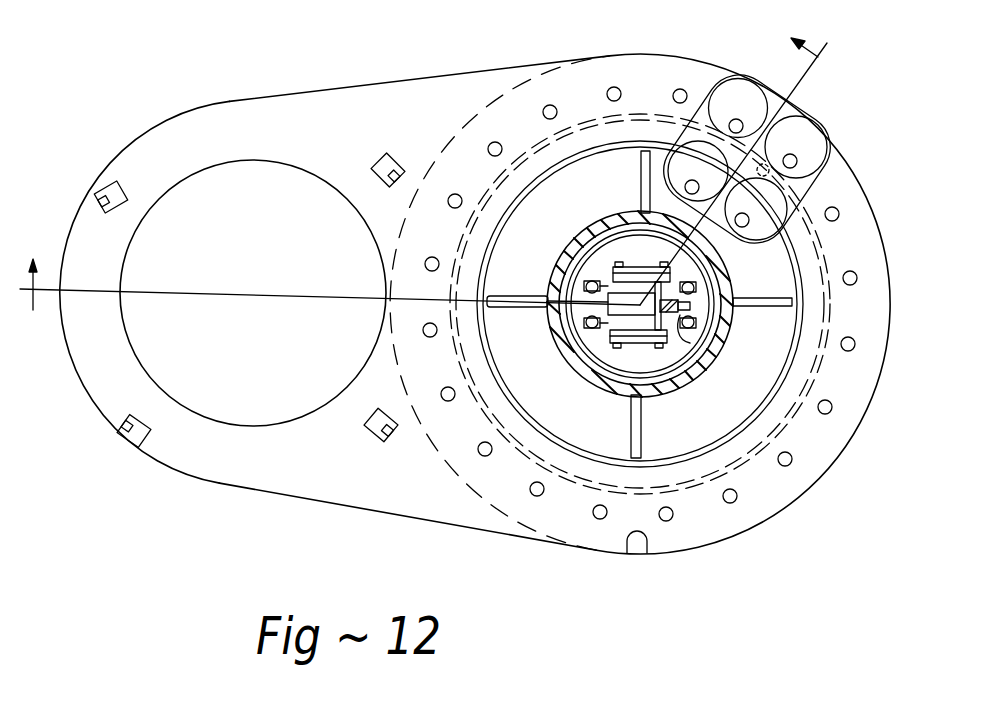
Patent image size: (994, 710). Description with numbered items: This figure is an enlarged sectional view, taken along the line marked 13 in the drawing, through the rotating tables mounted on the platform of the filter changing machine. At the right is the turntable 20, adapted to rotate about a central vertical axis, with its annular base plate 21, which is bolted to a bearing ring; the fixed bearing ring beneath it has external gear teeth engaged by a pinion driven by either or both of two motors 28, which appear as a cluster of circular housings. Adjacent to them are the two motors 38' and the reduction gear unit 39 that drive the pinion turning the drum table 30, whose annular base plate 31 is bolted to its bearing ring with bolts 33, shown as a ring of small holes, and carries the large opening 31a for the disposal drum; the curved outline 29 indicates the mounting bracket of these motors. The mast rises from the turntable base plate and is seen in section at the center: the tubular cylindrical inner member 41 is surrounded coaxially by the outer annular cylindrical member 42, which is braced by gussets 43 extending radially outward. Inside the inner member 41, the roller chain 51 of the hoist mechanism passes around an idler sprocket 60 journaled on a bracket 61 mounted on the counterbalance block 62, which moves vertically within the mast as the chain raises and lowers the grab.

The section line 13- 13 is at (440, 191).
The turntable 20 is at (518, 140).
The annular base plate 21 is at (600, 473).
The motor 28 is at (727, 190).
The roller cluster 29 is at (703, 127).
The drum table 30 is at (255, 78).
The annular base plate 31 is at (510, 497).
The plate edge 31a is at (100, 383).
The bolts 33 is at (478, 455).
The motor 38' is at (768, 129).
The reduction gear unit 39 is at (775, 88).
The inner member 41 is at (570, 267).
The outer member 42 is at (588, 237).
The gussets 43 is at (775, 307).
The roller chain 51 is at (585, 296).
The idler sprocket 60 is at (696, 327).
The bracket 61 is at (638, 347).
The counterbalance block 62 is at (598, 342).